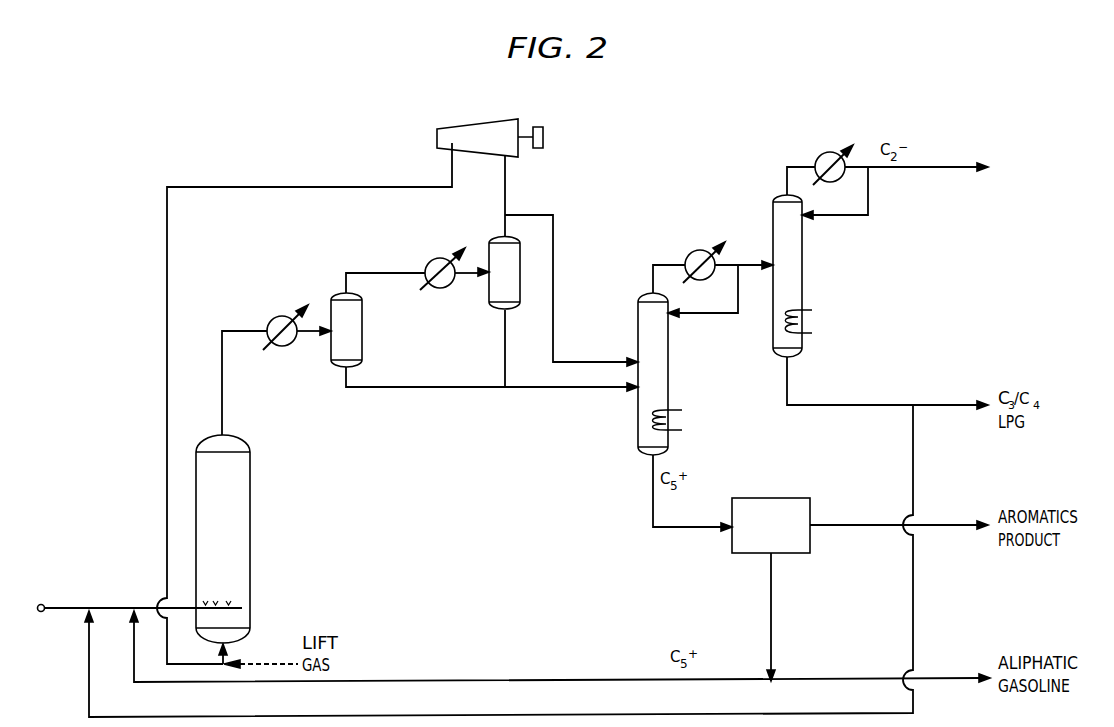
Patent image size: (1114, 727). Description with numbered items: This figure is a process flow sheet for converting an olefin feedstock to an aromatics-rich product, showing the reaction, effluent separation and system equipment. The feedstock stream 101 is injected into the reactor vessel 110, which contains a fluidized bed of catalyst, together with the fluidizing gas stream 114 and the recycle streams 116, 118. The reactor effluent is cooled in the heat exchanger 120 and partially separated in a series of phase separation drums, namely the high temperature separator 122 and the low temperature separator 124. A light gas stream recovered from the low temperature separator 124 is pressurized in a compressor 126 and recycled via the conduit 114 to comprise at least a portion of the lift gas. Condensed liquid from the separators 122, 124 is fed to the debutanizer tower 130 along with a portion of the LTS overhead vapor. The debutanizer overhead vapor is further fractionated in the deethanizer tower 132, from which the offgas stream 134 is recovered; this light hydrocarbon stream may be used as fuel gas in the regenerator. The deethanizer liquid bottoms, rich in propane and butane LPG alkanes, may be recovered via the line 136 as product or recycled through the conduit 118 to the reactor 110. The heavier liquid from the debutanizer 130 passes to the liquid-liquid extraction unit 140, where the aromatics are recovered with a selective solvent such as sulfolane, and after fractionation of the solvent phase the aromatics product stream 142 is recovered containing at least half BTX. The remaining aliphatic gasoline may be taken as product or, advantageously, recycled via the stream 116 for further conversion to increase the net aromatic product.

The feedstock stream 101 is at (60, 608).
The reactor vessel 110 is at (250, 485).
The fluidizing gas stream 114 is at (168, 664).
The recycle stream 116 is at (448, 681).
The recycle conduit 118 is at (505, 715).
The heat exchanger 120 is at (269, 325).
The high temperature separator 122 is at (332, 297).
The low temperature separator 124 is at (490, 240).
The compressor 126 is at (486, 119).
The debutanizer tower 130 is at (640, 295).
The deethanizer tower 132 is at (775, 197).
The offgas stream 134 is at (940, 167).
The LPG product line 136 is at (940, 405).
The liquid-liquid extraction unit 140 is at (768, 498).
The aromatics product stream 142 is at (930, 525).